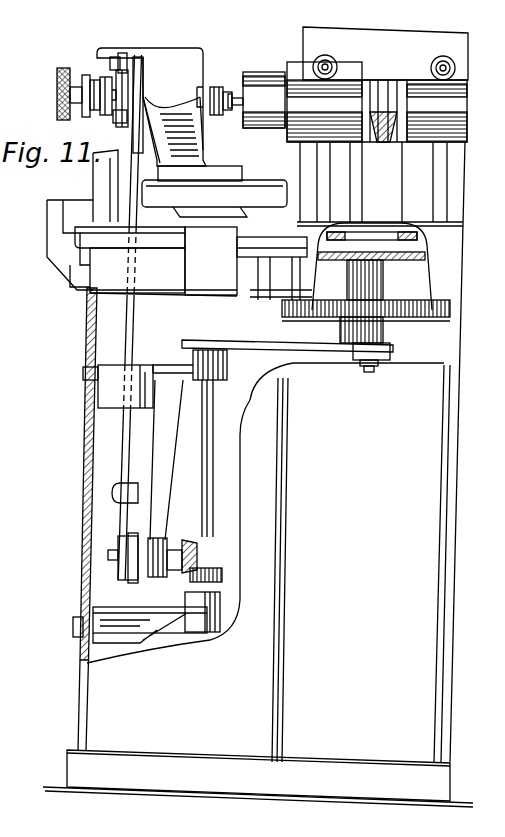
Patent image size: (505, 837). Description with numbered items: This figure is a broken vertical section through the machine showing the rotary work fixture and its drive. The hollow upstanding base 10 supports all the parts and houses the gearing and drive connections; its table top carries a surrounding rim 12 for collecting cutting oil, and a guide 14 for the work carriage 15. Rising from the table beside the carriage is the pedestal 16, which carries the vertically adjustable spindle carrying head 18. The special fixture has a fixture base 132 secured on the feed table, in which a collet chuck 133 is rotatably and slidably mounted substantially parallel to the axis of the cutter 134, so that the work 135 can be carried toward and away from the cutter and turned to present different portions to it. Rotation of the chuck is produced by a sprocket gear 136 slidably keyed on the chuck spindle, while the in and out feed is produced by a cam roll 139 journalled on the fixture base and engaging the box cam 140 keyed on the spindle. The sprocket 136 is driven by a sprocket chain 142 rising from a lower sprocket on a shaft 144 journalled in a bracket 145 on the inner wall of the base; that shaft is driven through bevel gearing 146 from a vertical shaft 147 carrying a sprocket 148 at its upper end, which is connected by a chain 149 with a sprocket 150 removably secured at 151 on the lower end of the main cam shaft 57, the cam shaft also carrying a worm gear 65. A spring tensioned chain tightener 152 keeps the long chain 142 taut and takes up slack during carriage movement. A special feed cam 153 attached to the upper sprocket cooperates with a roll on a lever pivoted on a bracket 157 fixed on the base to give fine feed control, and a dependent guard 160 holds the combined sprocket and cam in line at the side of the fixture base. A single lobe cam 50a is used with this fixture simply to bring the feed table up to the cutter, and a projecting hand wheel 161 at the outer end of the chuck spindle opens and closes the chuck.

The hollow upstanding base 10 is at (258, 474).
The surrounding rim 12 is at (144, 241).
The guide 14 is at (256, 228).
The work carriage 15 is at (259, 188).
The pedestal 16 is at (458, 185).
The spindle carrying head 18 is at (385, 53).
The single lobe cam 50a is at (393, 232).
The cam shaft 57 is at (367, 372).
The worm gear 65 is at (335, 308).
The fixture base 132 is at (192, 73).
The collet chuck 133 is at (216, 87).
The cutter 134 is at (230, 105).
The work 135 is at (232, 95).
The sprocket gear 136 is at (143, 60).
The cam roll 139 is at (110, 62).
The box cam 140 is at (95, 115).
The sprocket chain 142 is at (123, 315).
The shaft 144 is at (105, 558).
The bracket 145 is at (163, 472).
The bevel gearing 146 is at (198, 567).
The vertical shaft 147 is at (214, 409).
The sprocket 148 is at (187, 342).
The chain 149 is at (287, 335).
The sprocket 150 is at (385, 360).
The securing point 151 is at (370, 362).
The spring tensioned chain tightener 152 is at (118, 503).
The special feed cam 153 is at (121, 126).
The bracket 157 is at (92, 155).
The dependent guard 160 is at (122, 54).
The hand wheel 161 is at (57, 88).